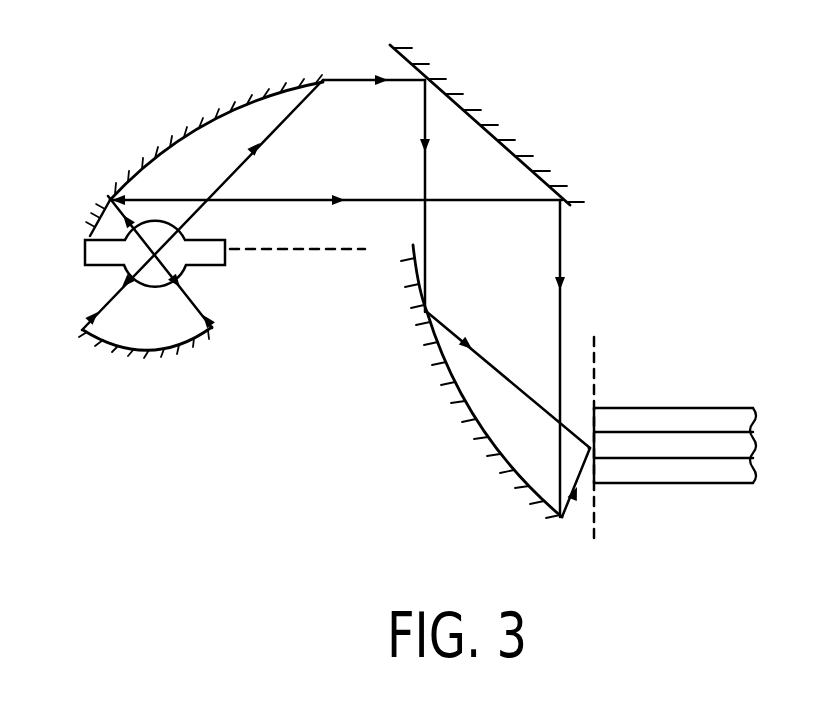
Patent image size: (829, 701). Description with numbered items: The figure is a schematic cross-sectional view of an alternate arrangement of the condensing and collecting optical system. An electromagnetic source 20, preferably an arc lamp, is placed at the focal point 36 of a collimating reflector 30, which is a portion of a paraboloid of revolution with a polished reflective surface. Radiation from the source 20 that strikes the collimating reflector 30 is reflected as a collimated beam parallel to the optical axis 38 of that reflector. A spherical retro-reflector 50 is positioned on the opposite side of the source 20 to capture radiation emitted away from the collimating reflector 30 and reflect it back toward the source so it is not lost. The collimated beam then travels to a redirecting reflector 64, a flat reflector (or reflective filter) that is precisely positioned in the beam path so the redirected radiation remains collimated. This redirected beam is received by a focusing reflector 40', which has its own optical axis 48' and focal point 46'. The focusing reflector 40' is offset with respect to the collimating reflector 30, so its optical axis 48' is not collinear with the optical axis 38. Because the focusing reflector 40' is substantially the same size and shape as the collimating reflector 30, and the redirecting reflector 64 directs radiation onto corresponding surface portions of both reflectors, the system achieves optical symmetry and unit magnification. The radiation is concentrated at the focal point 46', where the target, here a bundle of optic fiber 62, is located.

The electromagnetic source 20 is at (196, 268).
The collimating reflector 30 is at (222, 118).
The focal point 36 is at (152, 253).
The optical axis 38 is at (310, 253).
The focusing reflector 40' is at (481, 381).
The focal point 46' is at (544, 429).
The optical axis 48' is at (633, 438).
The retro-reflector 50 is at (160, 352).
The bundle of optic fiber 62 is at (694, 505).
The redirecting reflector 64 is at (472, 123).